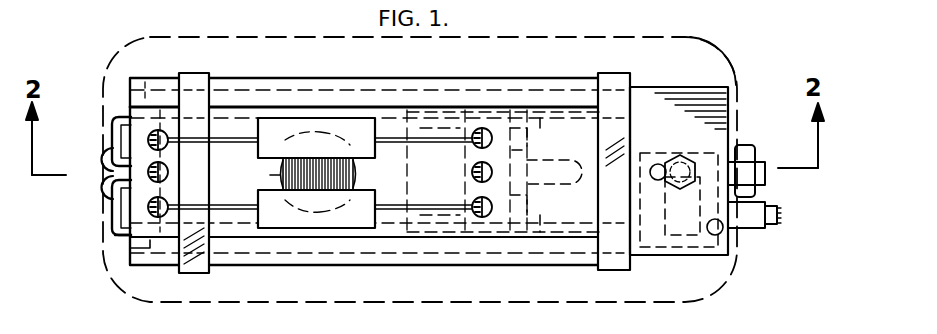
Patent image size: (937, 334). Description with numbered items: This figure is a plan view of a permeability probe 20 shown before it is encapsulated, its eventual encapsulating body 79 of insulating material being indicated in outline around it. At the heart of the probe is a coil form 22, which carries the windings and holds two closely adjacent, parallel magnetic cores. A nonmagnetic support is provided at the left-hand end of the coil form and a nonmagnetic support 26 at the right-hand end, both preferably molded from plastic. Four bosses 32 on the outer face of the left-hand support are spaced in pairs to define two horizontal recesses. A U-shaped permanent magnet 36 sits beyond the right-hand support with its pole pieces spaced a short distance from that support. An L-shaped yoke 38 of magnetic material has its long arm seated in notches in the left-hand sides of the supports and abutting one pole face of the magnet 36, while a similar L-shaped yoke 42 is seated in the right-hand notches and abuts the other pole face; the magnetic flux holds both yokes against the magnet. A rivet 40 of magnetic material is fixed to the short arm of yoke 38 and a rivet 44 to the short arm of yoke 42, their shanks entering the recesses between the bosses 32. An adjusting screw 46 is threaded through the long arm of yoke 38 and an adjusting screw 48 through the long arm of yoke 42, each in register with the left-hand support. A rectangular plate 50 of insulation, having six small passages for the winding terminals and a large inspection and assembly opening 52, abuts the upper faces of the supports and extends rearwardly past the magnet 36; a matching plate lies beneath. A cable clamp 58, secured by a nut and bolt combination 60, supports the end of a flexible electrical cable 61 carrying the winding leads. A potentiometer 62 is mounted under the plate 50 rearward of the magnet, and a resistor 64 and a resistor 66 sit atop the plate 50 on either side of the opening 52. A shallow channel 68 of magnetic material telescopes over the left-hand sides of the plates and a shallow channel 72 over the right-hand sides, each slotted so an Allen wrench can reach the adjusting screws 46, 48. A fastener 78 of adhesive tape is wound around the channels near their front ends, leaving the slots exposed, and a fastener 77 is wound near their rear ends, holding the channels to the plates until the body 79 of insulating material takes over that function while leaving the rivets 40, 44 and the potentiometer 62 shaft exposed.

The permeability probe 20 is at (612, 35).
The coil form 22 is at (347, 178).
The nonmagnetic support 26 is at (526, 130).
The bosses 32 is at (112, 206).
The permanent magnet 36 is at (585, 238).
The L-shaped yoke 38 is at (114, 117).
The rivet 40 is at (101, 160).
The L-shaped yoke 42 is at (114, 233).
The rivet 44 is at (101, 186).
The adjusting screw 46 is at (143, 82).
The adjusting screw 48 is at (128, 252).
The plate of insulation 50 is at (718, 87).
The large opening 52 is at (278, 176).
The cable clamp 58 is at (700, 248).
The nut and bolt combination 60 is at (684, 158).
The flexible electrical cable 61 is at (781, 214).
The potentiometer 62 is at (752, 160).
The resistor 64 is at (292, 124).
The resistor 66 is at (283, 222).
The shallow channel 68 is at (222, 78).
The shallow channel 72 is at (338, 266).
The fastener 77 is at (600, 73).
The fastener 78 is at (182, 73).
The body of insulating material 79 is at (724, 56).